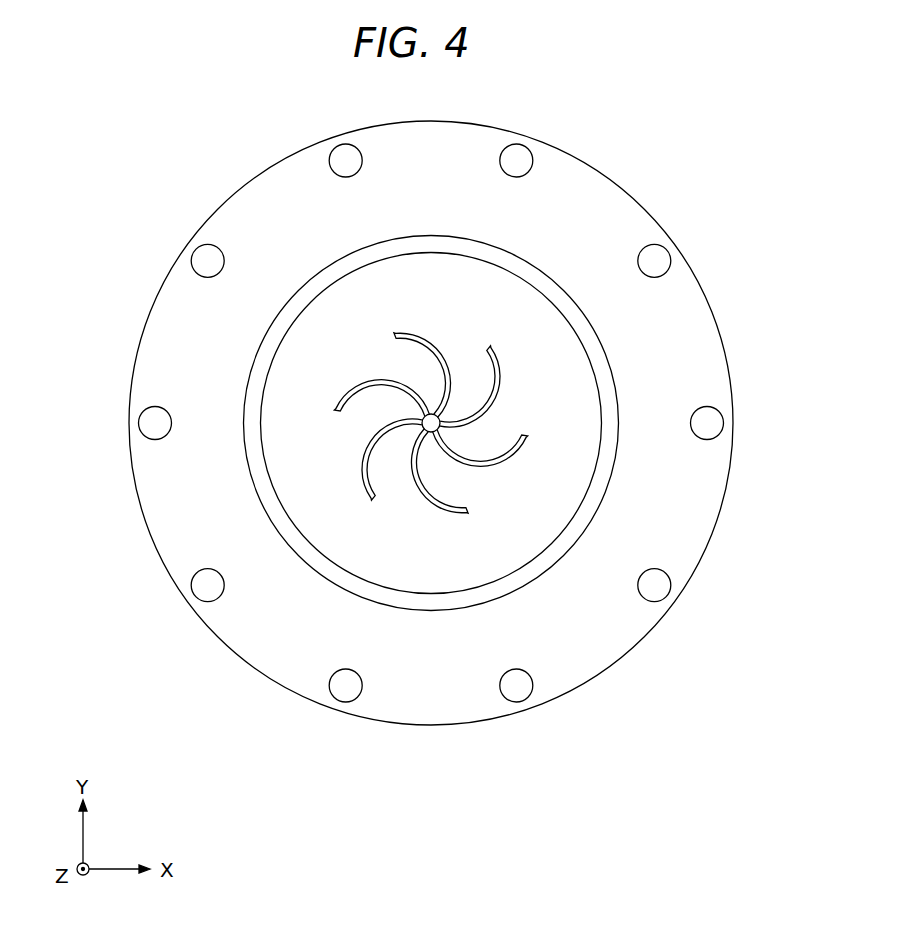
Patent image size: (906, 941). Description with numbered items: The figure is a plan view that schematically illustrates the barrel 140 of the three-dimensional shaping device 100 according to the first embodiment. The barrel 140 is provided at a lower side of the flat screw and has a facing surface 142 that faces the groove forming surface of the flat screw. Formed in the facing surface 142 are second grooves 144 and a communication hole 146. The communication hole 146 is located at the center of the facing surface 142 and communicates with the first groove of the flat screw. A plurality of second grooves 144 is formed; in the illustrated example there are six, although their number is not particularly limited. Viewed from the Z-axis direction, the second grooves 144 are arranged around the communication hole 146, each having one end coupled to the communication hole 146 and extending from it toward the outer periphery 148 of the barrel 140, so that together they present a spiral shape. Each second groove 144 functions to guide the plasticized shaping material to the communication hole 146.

The impeller assembly 100 is at (703, 111).
The barrel 140 is at (641, 169).
The facing surface 142 is at (466, 609).
The second groove 144 is at (418, 342).
The communication hole 146 is at (402, 428).
The outer periphery 148 is at (168, 573).